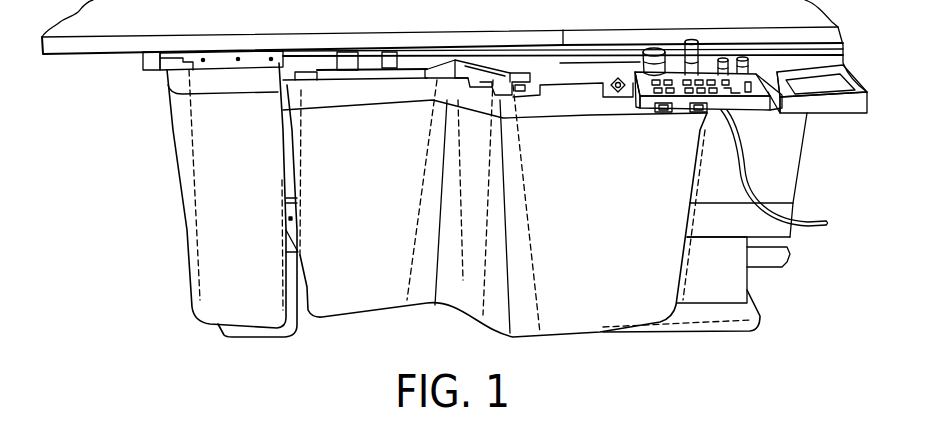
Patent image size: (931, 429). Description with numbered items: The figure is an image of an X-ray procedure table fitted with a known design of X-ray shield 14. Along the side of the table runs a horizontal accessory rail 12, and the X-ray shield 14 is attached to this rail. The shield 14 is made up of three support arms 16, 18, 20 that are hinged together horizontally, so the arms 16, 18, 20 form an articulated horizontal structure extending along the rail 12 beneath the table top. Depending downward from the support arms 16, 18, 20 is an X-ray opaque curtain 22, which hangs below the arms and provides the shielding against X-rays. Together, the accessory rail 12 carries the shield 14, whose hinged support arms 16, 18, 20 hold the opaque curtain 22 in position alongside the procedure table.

The horizontal accessory rail 12 is at (757, 55).
The X-ray shield 14 is at (667, 176).
The support arm 16 is at (568, 90).
The support arm 18 is at (480, 78).
The support arm 20 is at (347, 68).
The X-ray opaque curtain 22 is at (647, 283).